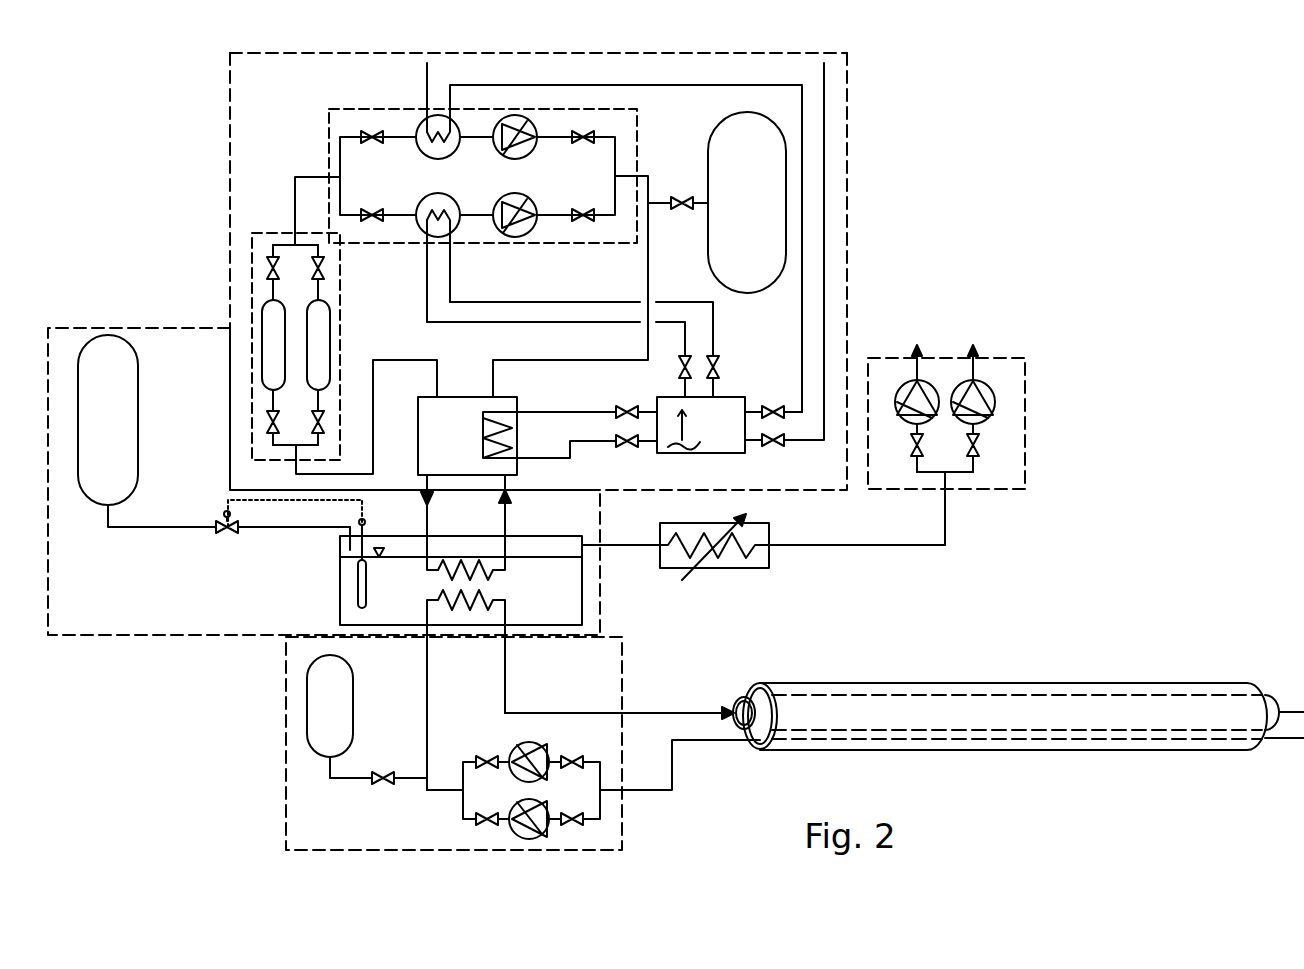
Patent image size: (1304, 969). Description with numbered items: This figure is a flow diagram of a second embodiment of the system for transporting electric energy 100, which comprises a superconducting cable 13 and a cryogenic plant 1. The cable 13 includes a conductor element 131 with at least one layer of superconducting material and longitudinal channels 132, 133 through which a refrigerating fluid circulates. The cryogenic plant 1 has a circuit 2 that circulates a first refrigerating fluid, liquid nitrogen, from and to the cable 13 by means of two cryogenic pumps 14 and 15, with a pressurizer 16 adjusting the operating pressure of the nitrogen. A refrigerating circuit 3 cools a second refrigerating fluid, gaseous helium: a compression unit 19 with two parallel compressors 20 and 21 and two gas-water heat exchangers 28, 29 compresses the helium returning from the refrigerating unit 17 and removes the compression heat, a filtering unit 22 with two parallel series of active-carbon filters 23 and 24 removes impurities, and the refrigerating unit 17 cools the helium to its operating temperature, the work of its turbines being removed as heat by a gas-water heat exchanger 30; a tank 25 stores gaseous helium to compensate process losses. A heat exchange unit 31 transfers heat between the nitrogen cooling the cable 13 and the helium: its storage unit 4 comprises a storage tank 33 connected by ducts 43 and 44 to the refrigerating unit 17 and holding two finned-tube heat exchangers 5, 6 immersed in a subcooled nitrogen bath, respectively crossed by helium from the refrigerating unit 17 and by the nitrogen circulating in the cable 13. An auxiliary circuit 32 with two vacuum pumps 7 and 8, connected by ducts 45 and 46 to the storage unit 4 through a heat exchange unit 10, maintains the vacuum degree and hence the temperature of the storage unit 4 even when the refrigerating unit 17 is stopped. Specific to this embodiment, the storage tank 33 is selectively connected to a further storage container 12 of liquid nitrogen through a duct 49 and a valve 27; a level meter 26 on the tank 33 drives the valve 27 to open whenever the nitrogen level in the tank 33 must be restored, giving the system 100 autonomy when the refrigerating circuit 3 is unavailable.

The cryogenic plant 1 is at (560, 50).
The circuit 2 is at (628, 842).
The refrigerating circuit 3 is at (847, 160).
The storage unit 4 is at (550, 590).
The heat exchanger 5 is at (459, 553).
The heat exchanger 6 is at (478, 610).
The vacuum pump 7 is at (897, 400).
The vacuum pump 8 is at (994, 392).
The heat exchange unit 10 is at (740, 551).
The storage container 12 is at (122, 415).
The superconducting cable 13 is at (920, 683).
The cryogenic pump 14 is at (527, 745).
The cryogenic pump 15 is at (522, 835).
The pressurizer 16 is at (340, 718).
The refrigerating unit 17 is at (462, 428).
The compression unit 19 is at (316, 138).
The compressor 20 is at (506, 155).
The compressor 21 is at (510, 203).
The filtering unit 22 is at (252, 240).
The active-carbon filter 23 is at (262, 320).
The active-carbon filter 24 is at (318, 350).
The tank 25 is at (720, 145).
The level meter 26 is at (356, 575).
The valve 27 is at (226, 536).
The gas-water heat exchanger 28 is at (435, 152).
The gas-water heat exchanger 29 is at (420, 227).
The gas-water heat exchanger 30 is at (505, 445).
The heat exchange unit 31 is at (243, 614).
The auxiliary circuit 32 is at (888, 553).
The storage tank 33 is at (340, 605).
The duct 43 is at (427, 510).
The duct 44 is at (505, 527).
The duct 45 is at (948, 515).
The duct 46 is at (649, 546).
The duct 49 is at (175, 530).
The system for transporting electric energy 100 is at (885, 295).
The conductor element 131 is at (765, 705).
The longitudinal channel 132 is at (738, 705).
The longitudinal channel 133 is at (760, 742).